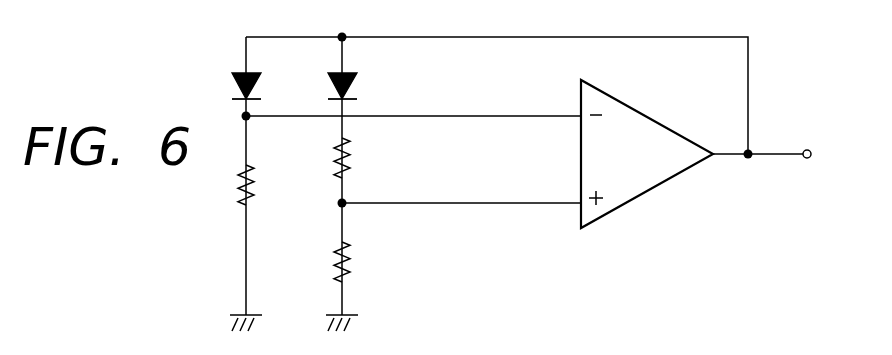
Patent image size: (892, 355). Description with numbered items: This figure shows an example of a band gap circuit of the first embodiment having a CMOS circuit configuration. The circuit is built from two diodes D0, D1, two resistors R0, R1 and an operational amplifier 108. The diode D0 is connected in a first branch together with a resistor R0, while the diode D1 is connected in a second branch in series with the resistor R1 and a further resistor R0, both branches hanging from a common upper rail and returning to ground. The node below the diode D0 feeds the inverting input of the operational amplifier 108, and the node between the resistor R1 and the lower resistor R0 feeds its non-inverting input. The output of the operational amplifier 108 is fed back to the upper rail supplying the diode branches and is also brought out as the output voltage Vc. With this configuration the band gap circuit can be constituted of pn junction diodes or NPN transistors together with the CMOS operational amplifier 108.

The operational amplifier 108 is at (657, 188).
The diode D0 is at (264, 87).
The diode D1 is at (361, 87).
The resistor R0 is at (315, 223).
The resistor R1 is at (363, 158).
The output voltage Vc is at (824, 154).